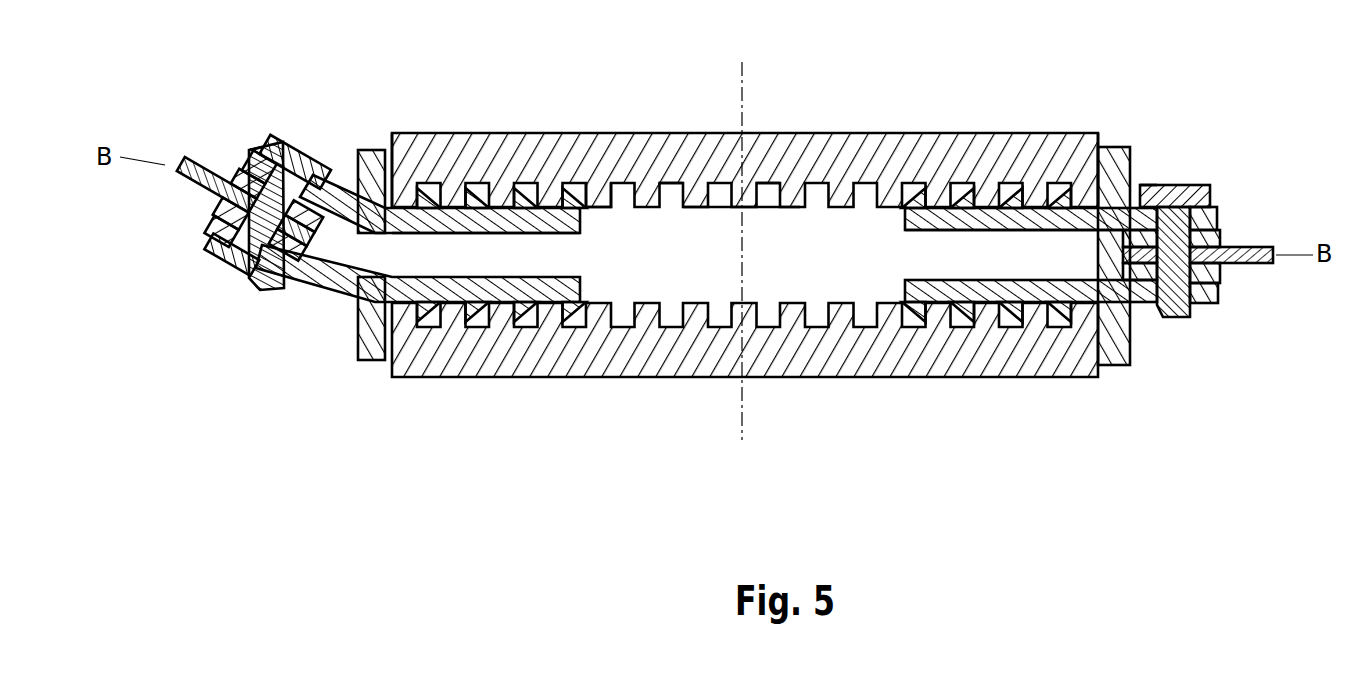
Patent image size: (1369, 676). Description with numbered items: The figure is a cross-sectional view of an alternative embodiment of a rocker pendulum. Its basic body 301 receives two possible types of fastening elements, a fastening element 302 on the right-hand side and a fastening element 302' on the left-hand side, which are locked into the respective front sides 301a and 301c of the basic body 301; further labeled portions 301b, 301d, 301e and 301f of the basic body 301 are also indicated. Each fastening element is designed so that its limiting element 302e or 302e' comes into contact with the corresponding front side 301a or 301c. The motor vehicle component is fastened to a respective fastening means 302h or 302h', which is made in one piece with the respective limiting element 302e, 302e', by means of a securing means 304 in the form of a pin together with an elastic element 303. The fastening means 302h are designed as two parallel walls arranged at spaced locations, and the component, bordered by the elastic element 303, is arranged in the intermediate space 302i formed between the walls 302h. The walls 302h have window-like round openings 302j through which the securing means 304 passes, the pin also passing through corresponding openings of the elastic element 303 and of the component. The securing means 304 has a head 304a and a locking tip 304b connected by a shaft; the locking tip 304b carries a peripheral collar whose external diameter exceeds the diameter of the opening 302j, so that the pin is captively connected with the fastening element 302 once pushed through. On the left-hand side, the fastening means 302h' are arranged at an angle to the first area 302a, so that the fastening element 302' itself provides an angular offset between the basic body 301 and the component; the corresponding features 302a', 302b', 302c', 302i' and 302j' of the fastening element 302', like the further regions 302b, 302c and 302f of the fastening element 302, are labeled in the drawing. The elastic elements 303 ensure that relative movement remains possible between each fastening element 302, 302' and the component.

The basic body 301 is at (718, 130).
The front side 301a is at (1093, 138).
The housing inner wall 301b is at (764, 185).
The front side 301c is at (393, 138).
The housing groove 301d is at (668, 188).
The housing rib 301e is at (598, 185).
The housing bore 301f is at (830, 263).
The fastening element 302 is at (1036, 179).
The first area 302a is at (986, 132).
The ferrule barb 302b is at (893, 386).
The ferrule barb 302c is at (1011, 386).
The limiting element 302e is at (1102, 306).
The ferrule bore 302f is at (522, 263).
The fastening means 302h is at (1255, 326).
The intermediate space 302i is at (1267, 220).
The openings 302j is at (1252, 169).
The fastening element 302' is at (417, 321).
The ferrule barb 302a' is at (501, 117).
The ferrule barb 302b' is at (560, 389).
The ferrule barb 302c' is at (459, 389).
The limiting element 302e' is at (366, 303).
The fastening means 302h' is at (264, 313).
The ferrule sleeve 302i' is at (230, 265).
The ferrule collar 302j' is at (163, 203).
The elastic element 303 is at (1265, 250).
The securing means 304 is at (1215, 285).
The head 304a is at (1165, 190).
The locking tip 304b is at (1175, 320).